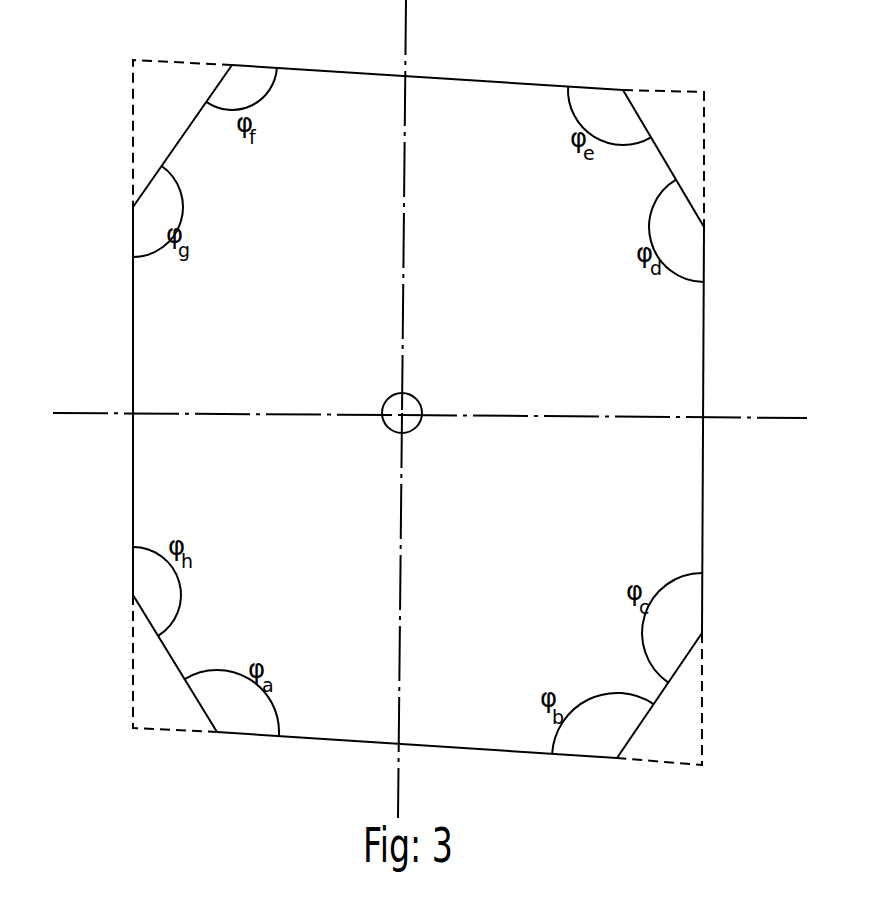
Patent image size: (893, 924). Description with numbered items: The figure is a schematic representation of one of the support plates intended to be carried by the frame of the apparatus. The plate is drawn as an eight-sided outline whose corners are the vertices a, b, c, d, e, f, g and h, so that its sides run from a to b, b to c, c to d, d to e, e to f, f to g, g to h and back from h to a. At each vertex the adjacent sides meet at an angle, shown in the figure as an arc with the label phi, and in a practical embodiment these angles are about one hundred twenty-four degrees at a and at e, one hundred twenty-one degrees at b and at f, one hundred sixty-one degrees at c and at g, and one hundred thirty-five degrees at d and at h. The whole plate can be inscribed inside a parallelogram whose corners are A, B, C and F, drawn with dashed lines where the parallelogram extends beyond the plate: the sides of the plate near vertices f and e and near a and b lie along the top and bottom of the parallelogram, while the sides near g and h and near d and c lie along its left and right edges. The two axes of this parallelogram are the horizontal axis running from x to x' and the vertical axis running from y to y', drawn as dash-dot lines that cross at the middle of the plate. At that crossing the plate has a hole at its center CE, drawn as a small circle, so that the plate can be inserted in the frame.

The vertex a is at (206, 680).
The vertex b is at (435, 744).
The vertex c is at (669, 665).
The vertex d is at (689, 406).
The vertex e is at (636, 143).
The vertex f is at (414, 71).
The vertex g is at (171, 161).
The vertex h is at (147, 421).
The parallelogram corner A is at (161, 680).
The parallelogram corner B is at (667, 718).
The parallelogram corner C is at (674, 141).
The parallelogram corner F is at (173, 115).
The axis end x is at (227, 400).
The axis end x' is at (604, 405).
The axis end y is at (406, 615).
The axis end y' is at (418, 206).
The center hole CE is at (415, 431).